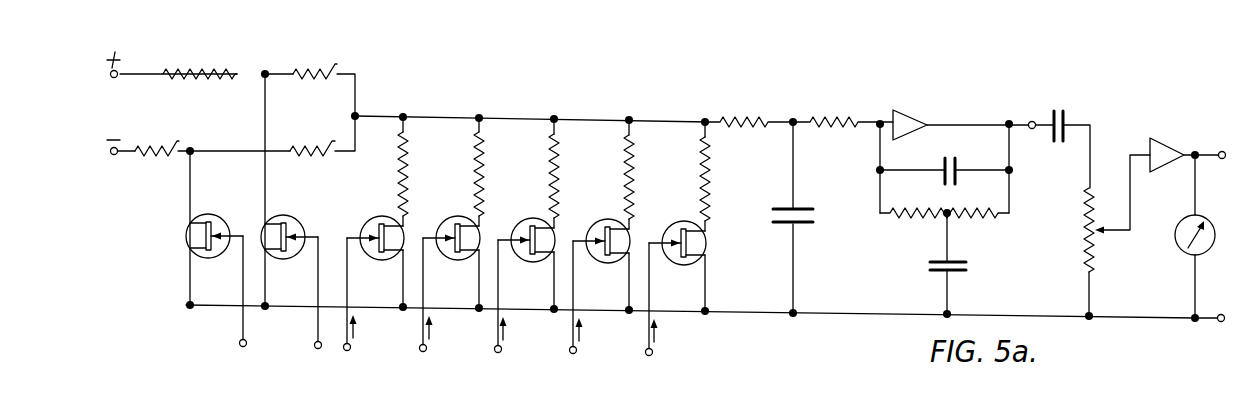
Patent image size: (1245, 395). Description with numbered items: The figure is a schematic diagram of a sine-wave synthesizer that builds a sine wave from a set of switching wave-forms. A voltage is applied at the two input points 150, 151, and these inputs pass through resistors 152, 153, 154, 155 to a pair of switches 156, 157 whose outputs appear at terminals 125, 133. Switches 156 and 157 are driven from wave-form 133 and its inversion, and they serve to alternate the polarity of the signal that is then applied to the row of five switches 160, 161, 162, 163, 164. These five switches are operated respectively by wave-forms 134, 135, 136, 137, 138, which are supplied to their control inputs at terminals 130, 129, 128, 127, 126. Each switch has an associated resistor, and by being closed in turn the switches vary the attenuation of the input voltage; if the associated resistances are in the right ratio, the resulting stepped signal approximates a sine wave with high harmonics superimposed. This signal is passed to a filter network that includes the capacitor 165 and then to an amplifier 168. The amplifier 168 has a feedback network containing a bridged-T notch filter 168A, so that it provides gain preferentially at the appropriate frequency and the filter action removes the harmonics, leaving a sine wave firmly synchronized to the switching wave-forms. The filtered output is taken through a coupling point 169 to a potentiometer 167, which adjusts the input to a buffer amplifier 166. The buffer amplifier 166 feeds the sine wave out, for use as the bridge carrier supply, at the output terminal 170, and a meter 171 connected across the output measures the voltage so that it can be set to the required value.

The terminal 125 is at (205, 349).
The gate input terminal 126 is at (650, 356).
The gate input terminal 127 is at (574, 354).
The gate input terminal 128 is at (499, 353).
The gate input terminal 129 is at (424, 352).
The gate input terminal 130 is at (349, 351).
The wave-form 133 is at (238, 345).
The wave-form 134 is at (371, 326).
The wave-form 135 is at (448, 327).
The wave-form 136 is at (521, 328).
The wave-form 137 is at (598, 329).
The wave-form 138 is at (673, 330).
The point 150 is at (127, 70).
The point 151 is at (116, 155).
The resistor 152 is at (216, 72).
The resistor 153 is at (327, 72).
The resistor 154 is at (171, 148).
The resistor 155 is at (313, 148).
The switch 156 is at (211, 214).
The switch 157 is at (291, 215).
The switch 160 is at (365, 217).
The switch 161 is at (440, 216).
The switch 162 is at (520, 218).
The switch 163 is at (596, 219).
The switch 164 is at (678, 220).
The capacitor 165 is at (783, 210).
The buffer amplifier 166 is at (1160, 140).
The potentiometer 167 is at (1093, 248).
The amplifier 168 is at (905, 117).
The bridged-T notch filter 168A is at (996, 203).
The output terminal 169 is at (1030, 121).
The output terminal 170 is at (1221, 150).
The meter 171 is at (1183, 217).